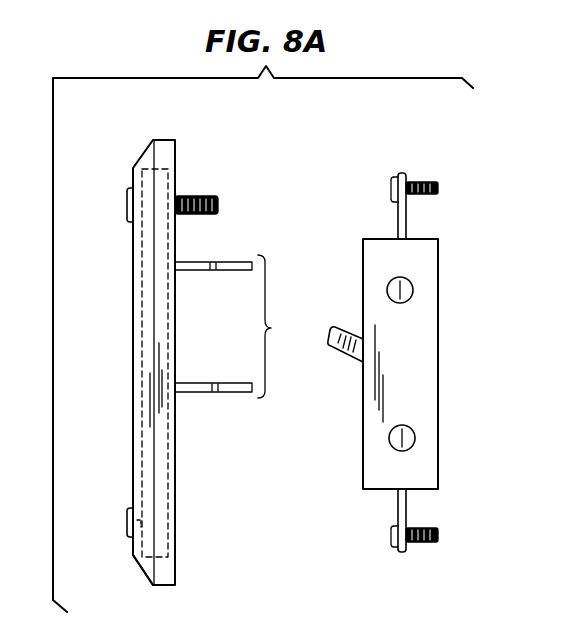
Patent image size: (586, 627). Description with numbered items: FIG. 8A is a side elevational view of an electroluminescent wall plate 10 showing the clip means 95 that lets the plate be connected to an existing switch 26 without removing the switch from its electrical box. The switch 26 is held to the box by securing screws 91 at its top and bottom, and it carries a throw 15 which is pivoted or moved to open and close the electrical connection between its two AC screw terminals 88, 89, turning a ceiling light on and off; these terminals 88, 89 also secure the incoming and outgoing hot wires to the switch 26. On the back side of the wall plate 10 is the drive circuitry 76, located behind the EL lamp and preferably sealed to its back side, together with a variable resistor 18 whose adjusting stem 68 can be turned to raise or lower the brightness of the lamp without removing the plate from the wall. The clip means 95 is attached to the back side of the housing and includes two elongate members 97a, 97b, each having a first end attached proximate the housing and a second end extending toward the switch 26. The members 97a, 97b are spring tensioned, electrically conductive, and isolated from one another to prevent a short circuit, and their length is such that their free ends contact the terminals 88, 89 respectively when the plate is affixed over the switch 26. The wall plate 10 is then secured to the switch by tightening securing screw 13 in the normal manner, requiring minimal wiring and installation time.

The EL wall plate 10 is at (129, 122).
The securing screw 13 is at (127, 201).
The throw 15 is at (345, 361).
The variable resistor 18 is at (130, 545).
The switch 26 is at (378, 253).
The adjusting stem 68 is at (127, 522).
The drive circuitry 76 is at (177, 528).
The screw terminal 88 is at (405, 304).
The screw terminal 89 is at (408, 424).
The securing screws 91 is at (418, 184).
The clip means 95 is at (279, 326).
The elongate member 97a is at (196, 271).
The elongate member 97b is at (207, 392).